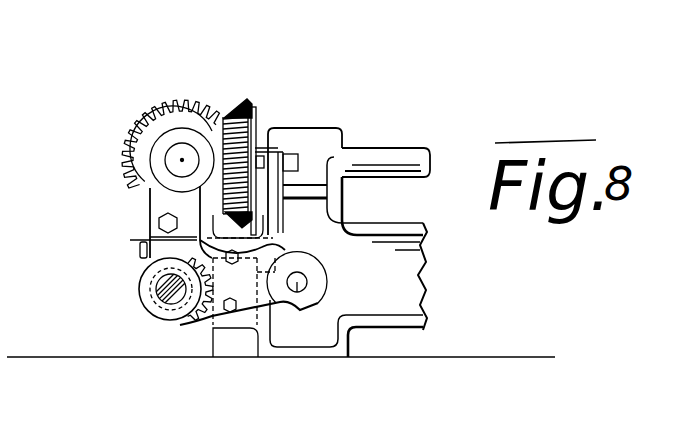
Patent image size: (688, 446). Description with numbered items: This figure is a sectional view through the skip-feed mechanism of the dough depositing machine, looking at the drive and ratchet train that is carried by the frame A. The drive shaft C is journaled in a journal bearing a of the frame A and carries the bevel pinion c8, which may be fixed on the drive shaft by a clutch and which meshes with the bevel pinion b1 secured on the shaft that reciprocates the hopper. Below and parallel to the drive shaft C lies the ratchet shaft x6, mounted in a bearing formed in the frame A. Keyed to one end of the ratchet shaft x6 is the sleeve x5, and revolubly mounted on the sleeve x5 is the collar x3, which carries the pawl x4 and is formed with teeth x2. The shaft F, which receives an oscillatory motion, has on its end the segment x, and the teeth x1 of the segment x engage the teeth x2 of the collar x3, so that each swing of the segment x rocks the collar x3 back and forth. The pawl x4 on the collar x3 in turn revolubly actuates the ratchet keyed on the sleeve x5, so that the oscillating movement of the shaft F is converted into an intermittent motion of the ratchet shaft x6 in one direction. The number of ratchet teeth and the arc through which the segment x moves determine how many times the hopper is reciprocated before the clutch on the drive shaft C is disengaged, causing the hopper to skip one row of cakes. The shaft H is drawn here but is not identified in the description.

The drive shaft C is at (180, 160).
The bevel pinion c8 is at (173, 102).
The bevel pinion b1 is at (247, 103).
The journal bearing a is at (312, 137).
The shaft H is at (395, 152).
The frame A is at (398, 272).
The pawl x4 is at (140, 238).
The sleeve x5 is at (150, 287).
The ratchet shaft x6 is at (152, 297).
The collar x3 is at (162, 313).
The teeth x2 is at (187, 323).
The teeth x1 is at (215, 327).
The segment x is at (262, 292).
The shaft F is at (337, 373).